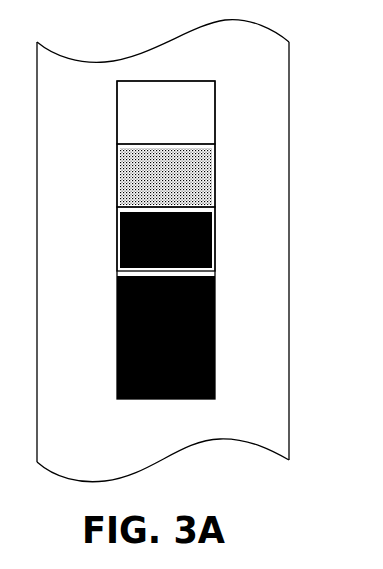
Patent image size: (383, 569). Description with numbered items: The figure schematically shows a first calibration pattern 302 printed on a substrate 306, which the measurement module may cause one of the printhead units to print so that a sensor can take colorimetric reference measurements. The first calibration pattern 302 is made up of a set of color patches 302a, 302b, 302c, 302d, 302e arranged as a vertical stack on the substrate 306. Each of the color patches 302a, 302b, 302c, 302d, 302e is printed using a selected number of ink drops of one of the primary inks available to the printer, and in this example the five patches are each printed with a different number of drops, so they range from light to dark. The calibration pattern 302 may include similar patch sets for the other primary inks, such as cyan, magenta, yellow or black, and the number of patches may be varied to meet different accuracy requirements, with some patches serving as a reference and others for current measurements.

The first calibration pattern 302 is at (164, 231).
The color patch 302a is at (210, 90).
The color patch 302b is at (207, 150).
The color patch 302c is at (207, 218).
The color patch 302d is at (203, 282).
The color patch 302e is at (215, 347).
The substrate 306 is at (78, 383).